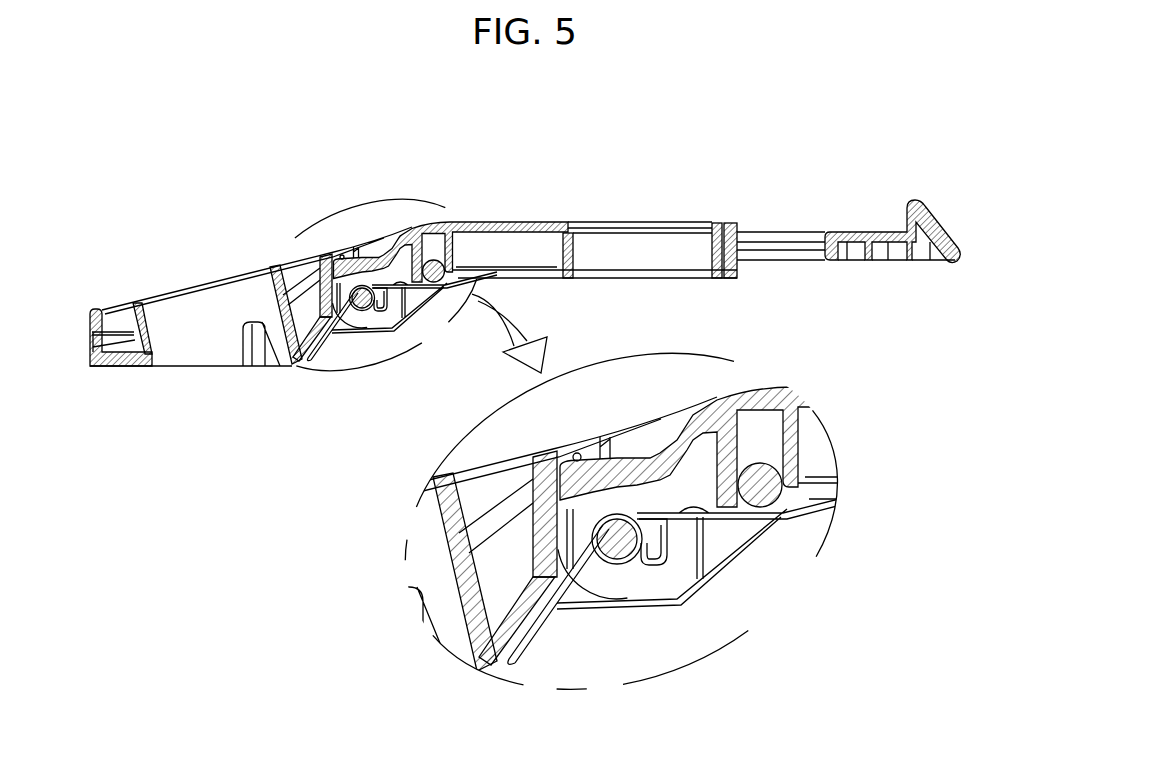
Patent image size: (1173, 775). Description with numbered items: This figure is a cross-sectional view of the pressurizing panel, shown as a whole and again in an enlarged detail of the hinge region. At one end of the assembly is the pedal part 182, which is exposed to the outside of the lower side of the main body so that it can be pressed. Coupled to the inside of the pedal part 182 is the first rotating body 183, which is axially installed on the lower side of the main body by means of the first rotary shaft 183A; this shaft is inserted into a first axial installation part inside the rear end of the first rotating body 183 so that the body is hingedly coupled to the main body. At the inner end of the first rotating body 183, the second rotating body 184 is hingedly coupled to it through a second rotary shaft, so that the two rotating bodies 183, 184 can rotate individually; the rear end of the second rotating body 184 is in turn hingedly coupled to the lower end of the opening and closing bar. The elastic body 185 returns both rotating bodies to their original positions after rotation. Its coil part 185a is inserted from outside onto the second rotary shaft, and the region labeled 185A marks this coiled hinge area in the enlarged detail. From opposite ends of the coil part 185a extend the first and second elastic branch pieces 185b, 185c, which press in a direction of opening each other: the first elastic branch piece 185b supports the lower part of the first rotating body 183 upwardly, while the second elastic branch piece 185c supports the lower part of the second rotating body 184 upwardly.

The pedal part 182 is at (863, 232).
The first rotating body 183 is at (512, 222).
The first rotary shaft 183A is at (768, 493).
The second rotating body 184 is at (258, 292).
The elastic body 185 is at (608, 494).
The coil portion 185A is at (622, 552).
The coil part 185a is at (642, 562).
The first elastic branch piece 185b is at (737, 518).
The second elastic branch piece 185c is at (523, 640).